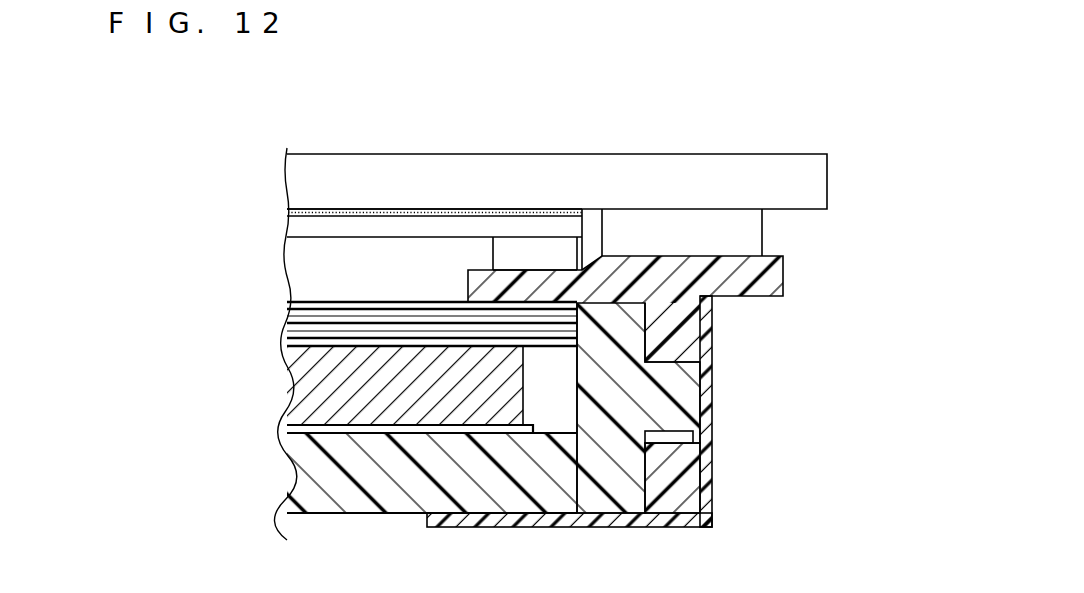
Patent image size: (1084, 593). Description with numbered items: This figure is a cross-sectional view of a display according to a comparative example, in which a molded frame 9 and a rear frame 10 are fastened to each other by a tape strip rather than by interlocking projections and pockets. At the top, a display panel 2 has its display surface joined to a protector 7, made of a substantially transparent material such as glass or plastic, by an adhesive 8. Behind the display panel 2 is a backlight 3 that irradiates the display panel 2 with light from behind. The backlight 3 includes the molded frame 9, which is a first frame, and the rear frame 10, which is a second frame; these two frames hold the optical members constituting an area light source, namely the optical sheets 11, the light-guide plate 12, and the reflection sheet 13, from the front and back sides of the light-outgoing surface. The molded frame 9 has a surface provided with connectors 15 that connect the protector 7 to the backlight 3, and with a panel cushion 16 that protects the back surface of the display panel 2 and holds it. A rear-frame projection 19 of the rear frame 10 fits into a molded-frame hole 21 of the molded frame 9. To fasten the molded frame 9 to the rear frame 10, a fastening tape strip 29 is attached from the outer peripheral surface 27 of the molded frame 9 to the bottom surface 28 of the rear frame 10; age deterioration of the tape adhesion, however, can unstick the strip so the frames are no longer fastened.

The protector 7 is at (812, 182).
The adhesive 8 is at (288, 212).
The display panel 2 is at (295, 226).
The panel cushion 16 is at (535, 253).
The connectors 15 is at (755, 236).
The molded frame 9 is at (773, 277).
The outer peripheral surface 27 is at (703, 303).
The fastening tape strip 29 is at (707, 480).
The molded-frame hole 21 is at (680, 383).
The rear-frame projection 19 is at (667, 420).
The bottom surface 28 is at (350, 513).
The backlight 3 is at (380, 344).
The optical sheets 11 is at (278, 305).
The light-guide plate 12 is at (300, 390).
The reflection sheet 13 is at (297, 428).
The rear frame 10 is at (403, 473).